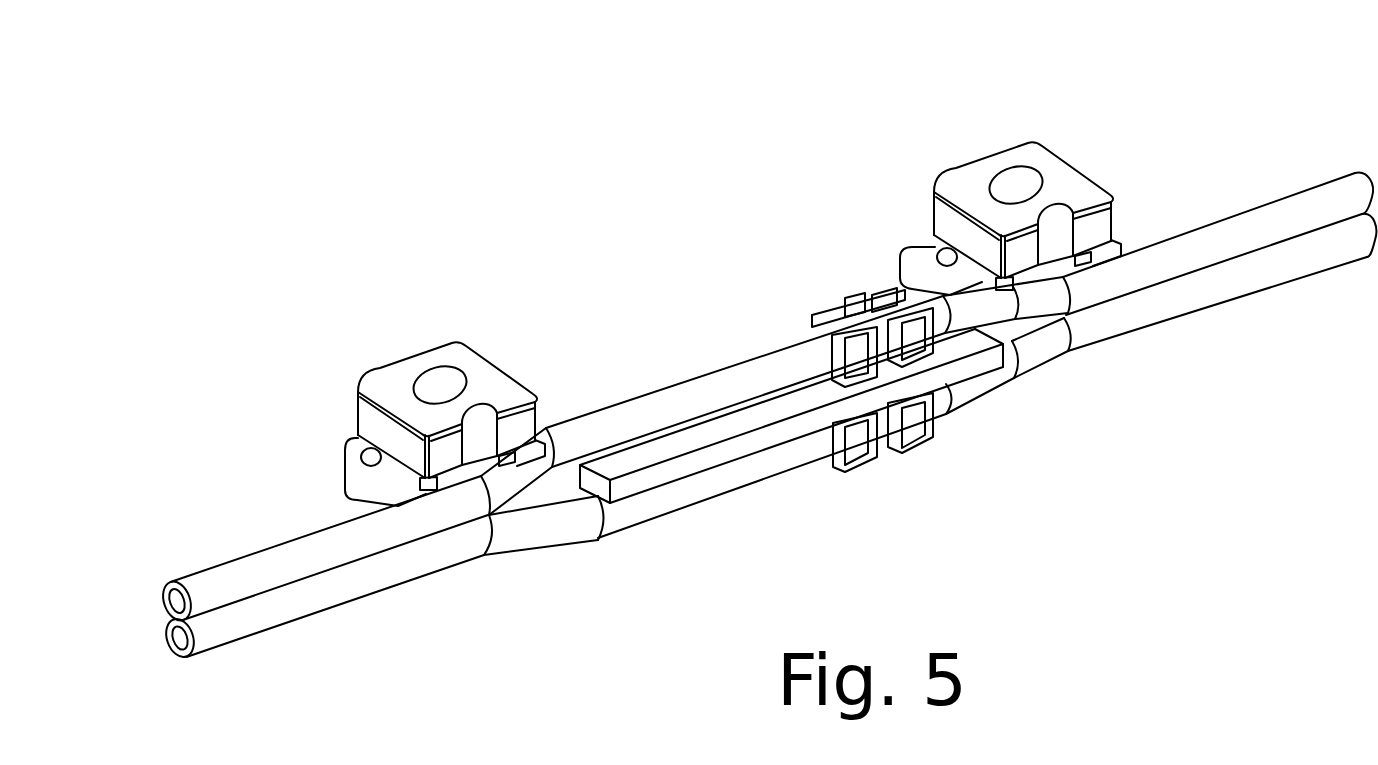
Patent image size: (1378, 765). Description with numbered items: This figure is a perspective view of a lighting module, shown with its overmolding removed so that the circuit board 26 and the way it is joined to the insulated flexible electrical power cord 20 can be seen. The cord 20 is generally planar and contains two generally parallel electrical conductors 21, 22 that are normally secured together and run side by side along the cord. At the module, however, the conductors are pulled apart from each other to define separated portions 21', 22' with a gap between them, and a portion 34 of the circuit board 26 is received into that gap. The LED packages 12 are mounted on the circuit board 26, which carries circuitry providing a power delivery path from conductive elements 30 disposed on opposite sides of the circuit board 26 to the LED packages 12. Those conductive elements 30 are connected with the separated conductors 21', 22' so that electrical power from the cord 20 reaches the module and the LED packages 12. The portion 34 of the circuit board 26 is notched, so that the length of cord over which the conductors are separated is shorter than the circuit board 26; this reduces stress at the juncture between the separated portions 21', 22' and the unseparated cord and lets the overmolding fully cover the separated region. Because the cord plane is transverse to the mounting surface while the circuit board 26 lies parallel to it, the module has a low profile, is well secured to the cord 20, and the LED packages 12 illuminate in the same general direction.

The LED package 12 is at (430, 377).
The insulated flexible electrical power cord 20 is at (235, 570).
The electrical conductor 21 is at (313, 528).
The electrical conductor 22 is at (361, 580).
The separated portion 21' is at (959, 320).
The separated portion 22' is at (987, 396).
The circuit board 26 is at (343, 473).
The conductive element 30 is at (827, 312).
The portion of the circuit board 34 is at (695, 462).